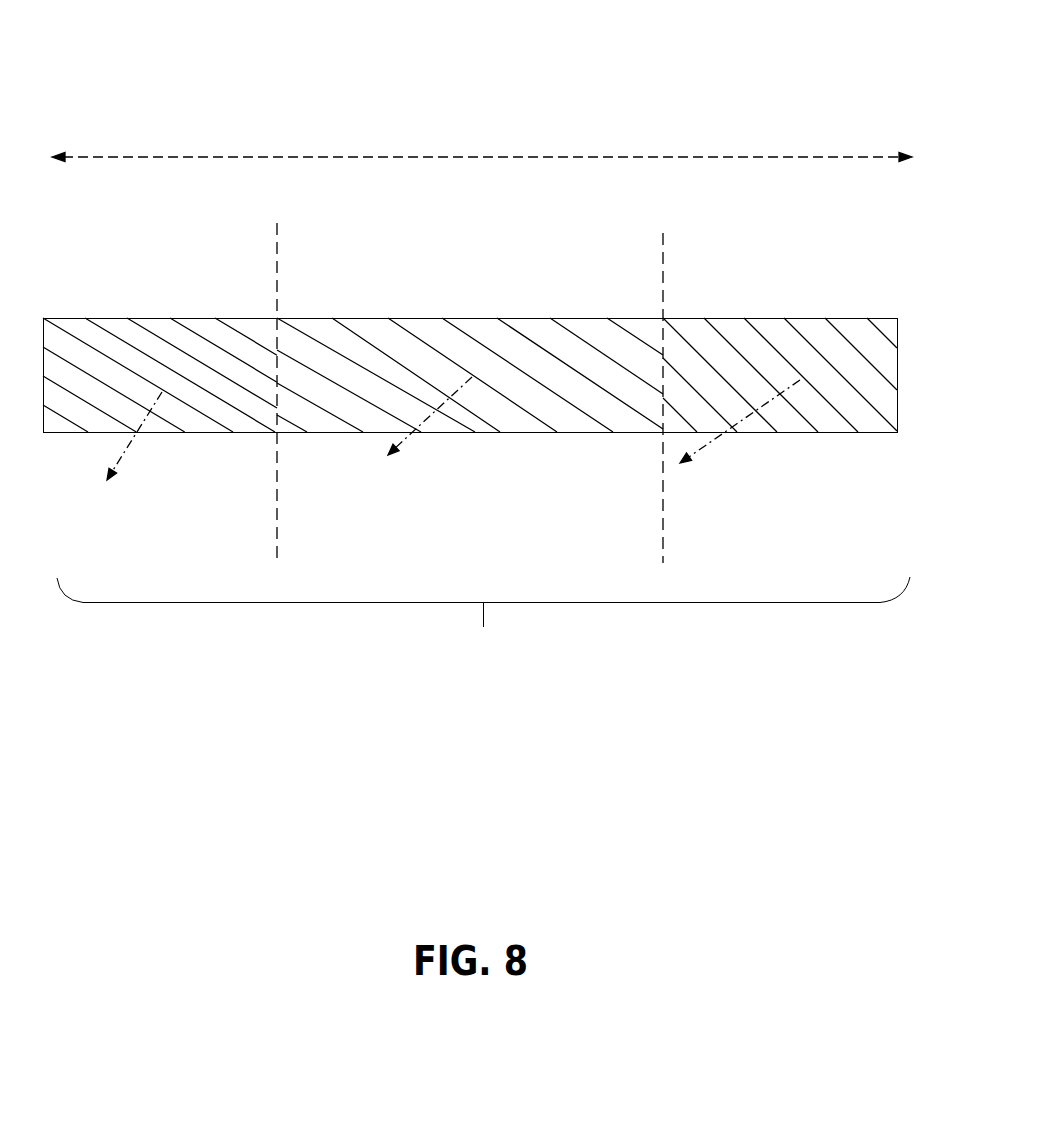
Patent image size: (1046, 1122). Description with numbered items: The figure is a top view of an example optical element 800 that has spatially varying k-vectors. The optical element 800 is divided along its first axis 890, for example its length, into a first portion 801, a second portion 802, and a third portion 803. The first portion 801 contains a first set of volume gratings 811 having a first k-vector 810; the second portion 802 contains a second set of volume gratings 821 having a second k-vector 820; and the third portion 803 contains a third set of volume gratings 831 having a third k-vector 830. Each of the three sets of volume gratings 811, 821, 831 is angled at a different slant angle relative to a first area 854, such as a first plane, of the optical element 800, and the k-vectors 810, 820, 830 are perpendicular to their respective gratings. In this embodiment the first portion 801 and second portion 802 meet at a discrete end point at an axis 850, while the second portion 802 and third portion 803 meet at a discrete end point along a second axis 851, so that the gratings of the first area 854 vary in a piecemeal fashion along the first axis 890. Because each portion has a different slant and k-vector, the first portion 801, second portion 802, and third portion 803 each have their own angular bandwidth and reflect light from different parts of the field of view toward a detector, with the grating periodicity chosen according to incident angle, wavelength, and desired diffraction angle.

The optical element 800 is at (543, 76).
The first axis 890 is at (172, 157).
The axis 850 is at (277, 238).
The second axis 851 is at (663, 255).
The first portion 801 is at (158, 318).
The first set of volume gratings 811 is at (87, 350).
The second portion 802 is at (485, 318).
The second set of volume gratings 821 is at (587, 338).
The third portion 803 is at (840, 318).
The third set of volume gratings 831 is at (882, 377).
The first k-vector 810 is at (123, 448).
The second k-vector 820 is at (405, 437).
The third k-vector 830 is at (700, 448).
The first area 854 is at (483, 630).